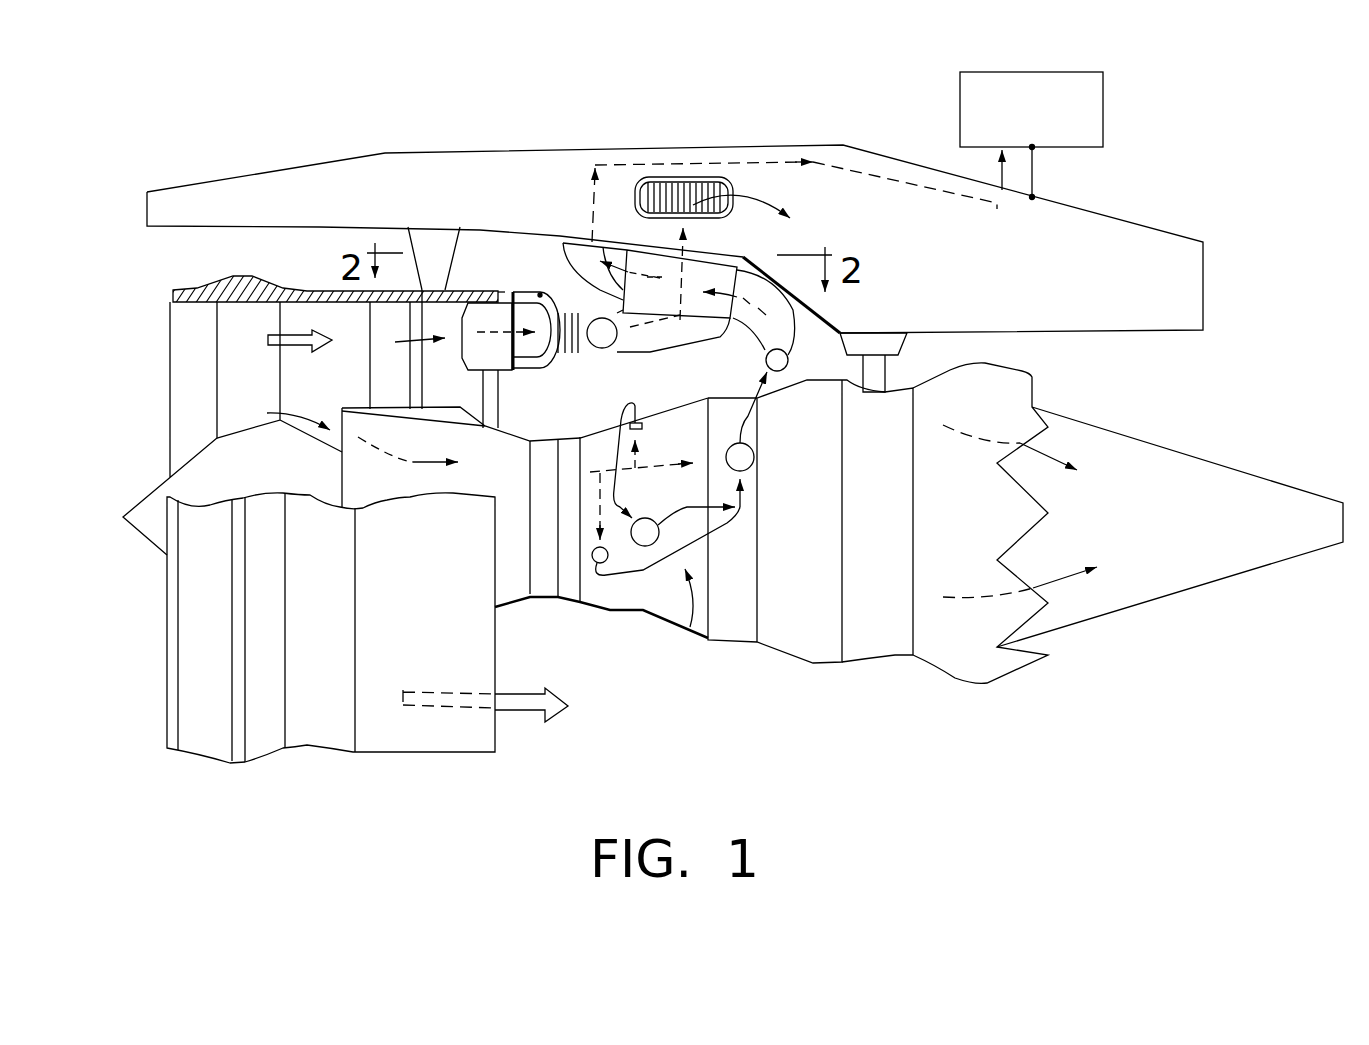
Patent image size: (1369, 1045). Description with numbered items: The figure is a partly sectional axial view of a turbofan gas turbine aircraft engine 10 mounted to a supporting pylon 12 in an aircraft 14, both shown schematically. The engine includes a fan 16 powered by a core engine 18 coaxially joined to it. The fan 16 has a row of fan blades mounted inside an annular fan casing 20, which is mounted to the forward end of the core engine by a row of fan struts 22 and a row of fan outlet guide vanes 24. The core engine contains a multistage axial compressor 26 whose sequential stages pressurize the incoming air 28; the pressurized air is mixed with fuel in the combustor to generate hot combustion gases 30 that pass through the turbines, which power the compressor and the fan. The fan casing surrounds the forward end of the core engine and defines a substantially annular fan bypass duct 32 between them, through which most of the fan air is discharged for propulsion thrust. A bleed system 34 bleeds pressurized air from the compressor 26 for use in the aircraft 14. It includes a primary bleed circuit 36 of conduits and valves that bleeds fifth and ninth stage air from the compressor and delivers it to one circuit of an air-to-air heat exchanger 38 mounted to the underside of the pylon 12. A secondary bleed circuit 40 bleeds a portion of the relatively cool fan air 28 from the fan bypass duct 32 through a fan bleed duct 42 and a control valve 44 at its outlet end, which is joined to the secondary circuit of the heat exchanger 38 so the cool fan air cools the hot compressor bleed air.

The turbofan gas turbine aircraft engine 10 is at (1248, 348).
The supporting pylon 12 is at (1150, 296).
The aircraft 14 is at (1103, 108).
The fan 16 is at (217, 397).
The core engine 18 is at (873, 665).
The fan casing 20 is at (425, 644).
The fan struts 22 is at (464, 404).
The fan outlet guide vanes 24 is at (393, 323).
The multistage axial compressor 26 is at (608, 611).
The air 28 is at (287, 345).
The hot combustion gases 30 is at (1057, 575).
The fan bypass duct 32 is at (340, 404).
The bleed system 34 is at (682, 626).
The primary bleed circuit 36 is at (745, 426).
The heat exchanger 38 is at (717, 250).
The secondary bleed circuit 40 is at (672, 343).
The fan bleed duct 42 is at (560, 360).
The control valve 44 is at (598, 357).